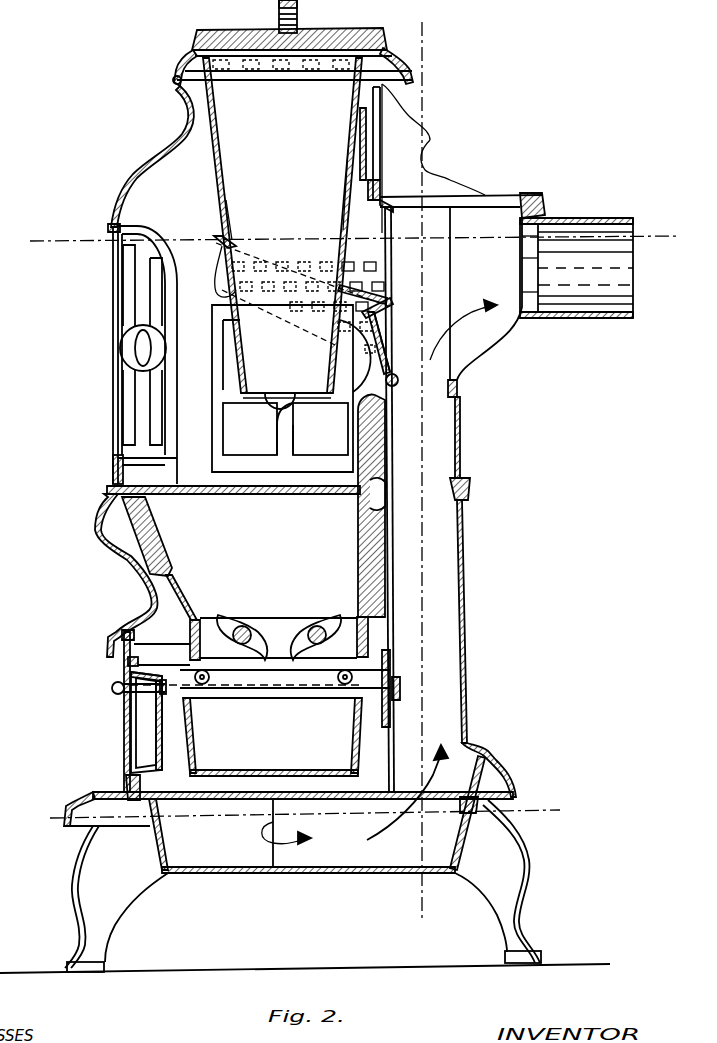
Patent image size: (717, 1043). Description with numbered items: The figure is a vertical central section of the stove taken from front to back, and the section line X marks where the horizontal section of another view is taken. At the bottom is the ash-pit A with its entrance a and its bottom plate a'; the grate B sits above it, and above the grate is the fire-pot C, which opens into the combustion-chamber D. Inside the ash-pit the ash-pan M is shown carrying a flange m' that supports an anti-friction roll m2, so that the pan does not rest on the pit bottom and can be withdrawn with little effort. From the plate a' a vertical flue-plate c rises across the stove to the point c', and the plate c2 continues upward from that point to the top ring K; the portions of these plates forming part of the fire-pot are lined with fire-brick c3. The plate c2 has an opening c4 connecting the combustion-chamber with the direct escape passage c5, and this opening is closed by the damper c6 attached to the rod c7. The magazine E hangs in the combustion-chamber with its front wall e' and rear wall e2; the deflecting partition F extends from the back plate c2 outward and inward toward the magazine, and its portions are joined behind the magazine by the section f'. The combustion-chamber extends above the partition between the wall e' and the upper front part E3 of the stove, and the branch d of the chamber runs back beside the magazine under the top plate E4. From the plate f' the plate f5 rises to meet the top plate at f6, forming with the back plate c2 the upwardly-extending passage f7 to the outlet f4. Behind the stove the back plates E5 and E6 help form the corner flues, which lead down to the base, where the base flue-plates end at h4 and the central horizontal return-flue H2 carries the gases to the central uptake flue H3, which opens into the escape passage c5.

The section line x x X is at (353, 238).
The connection point of plate f5 with top plate f6 is at (414, 62).
The magazine E is at (220, 163).
The front wall of the magazine e' is at (215, 220).
The rear wall of the magazine e2 is at (346, 180).
The top plate of the stove E4 is at (152, 156).
The casing space d is at (167, 178).
The upper part of the front of the stove E3 is at (104, 211).
The combustion-chamber D is at (154, 355).
The partition F is at (212, 252).
The connecting section of the partition f' is at (369, 285).
The opening in plate c2 c4 is at (387, 297).
The damper c6 is at (386, 340).
The rod c7 is at (404, 375).
The plate c2 (back plate) c2 is at (388, 455).
The point c' is at (389, 494).
The fire-brick c3 is at (360, 533).
The vertical flue-plate c is at (395, 499).
The top ring K is at (381, 143).
The outlet f4 is at (378, 135).
The plate f5 is at (366, 160).
The upwardly-extending passage f7 is at (458, 176).
The direct escape port or passage c5 is at (462, 295).
The back plate E6 is at (461, 438).
The back plate E5 is at (466, 547).
The central uptake passage or flue H3 is at (486, 694).
The fire-pot C is at (253, 558).
The grate B is at (262, 628).
The anti-friction rolls m2 is at (212, 673).
The flange of the ash-pan m' is at (183, 666).
The entrance to the ash-pit a is at (130, 722).
The ash-pan M is at (272, 737).
The ash-pit A is at (177, 734).
The plate forming the ash-pit bottom a' is at (371, 778).
The end point of the flue-plates h4 is at (270, 852).
The central horizontal return-flue H2 is at (385, 799).